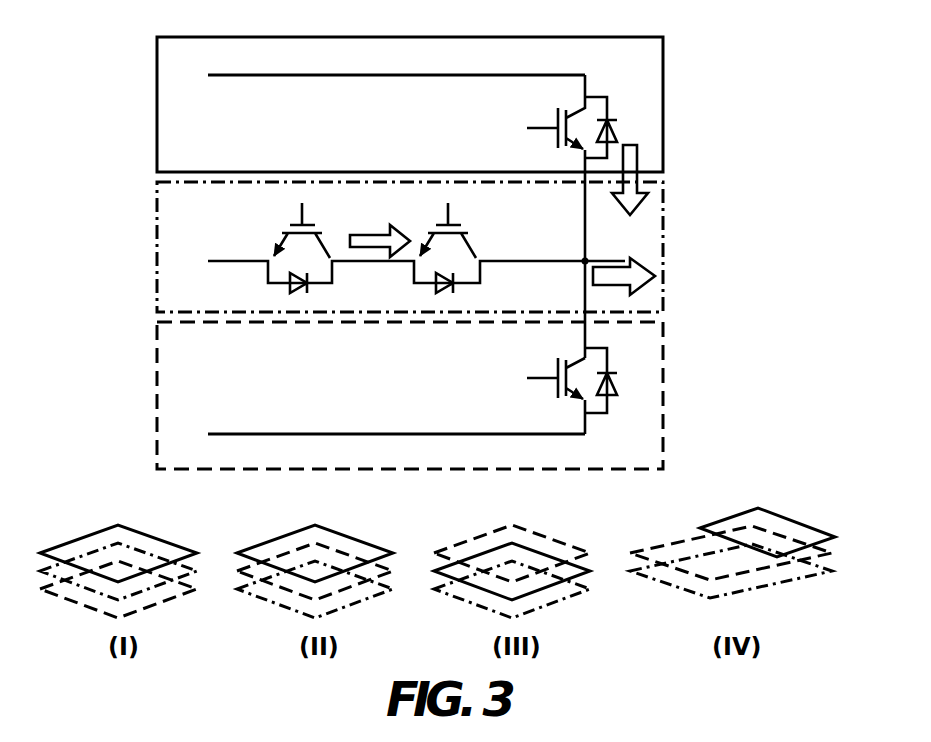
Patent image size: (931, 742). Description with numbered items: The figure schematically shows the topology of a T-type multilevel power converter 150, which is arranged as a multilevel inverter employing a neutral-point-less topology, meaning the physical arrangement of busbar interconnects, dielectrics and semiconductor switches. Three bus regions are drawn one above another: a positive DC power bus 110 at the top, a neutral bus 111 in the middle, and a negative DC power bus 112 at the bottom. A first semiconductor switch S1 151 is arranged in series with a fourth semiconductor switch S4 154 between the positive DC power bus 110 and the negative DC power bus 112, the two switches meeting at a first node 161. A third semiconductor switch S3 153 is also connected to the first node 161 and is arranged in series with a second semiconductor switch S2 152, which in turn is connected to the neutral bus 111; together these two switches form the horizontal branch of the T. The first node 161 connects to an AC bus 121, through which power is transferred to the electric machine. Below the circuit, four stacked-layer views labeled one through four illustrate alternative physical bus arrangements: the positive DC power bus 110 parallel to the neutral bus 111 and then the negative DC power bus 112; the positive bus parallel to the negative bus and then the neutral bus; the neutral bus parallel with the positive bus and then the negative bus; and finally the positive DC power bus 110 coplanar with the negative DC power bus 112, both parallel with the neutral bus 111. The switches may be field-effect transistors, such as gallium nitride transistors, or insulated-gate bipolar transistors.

The T-type multilevel power converter 150 is at (140, 66).
The positive DC power bus 110 is at (663, 122).
The neutral bus 111 is at (663, 216).
The negative DC power bus 112 is at (663, 384).
The first semiconductor switch S1 151 is at (595, 93).
The second semiconductor switch S2 152 is at (280, 247).
The third semiconductor switch S3 153 is at (465, 241).
The fourth semiconductor switch S4 154 is at (595, 418).
The first node 161 is at (586, 259).
The AC bus 121 is at (607, 261).